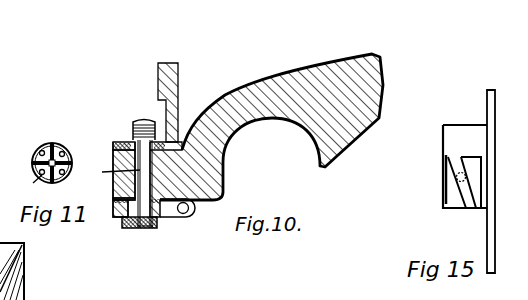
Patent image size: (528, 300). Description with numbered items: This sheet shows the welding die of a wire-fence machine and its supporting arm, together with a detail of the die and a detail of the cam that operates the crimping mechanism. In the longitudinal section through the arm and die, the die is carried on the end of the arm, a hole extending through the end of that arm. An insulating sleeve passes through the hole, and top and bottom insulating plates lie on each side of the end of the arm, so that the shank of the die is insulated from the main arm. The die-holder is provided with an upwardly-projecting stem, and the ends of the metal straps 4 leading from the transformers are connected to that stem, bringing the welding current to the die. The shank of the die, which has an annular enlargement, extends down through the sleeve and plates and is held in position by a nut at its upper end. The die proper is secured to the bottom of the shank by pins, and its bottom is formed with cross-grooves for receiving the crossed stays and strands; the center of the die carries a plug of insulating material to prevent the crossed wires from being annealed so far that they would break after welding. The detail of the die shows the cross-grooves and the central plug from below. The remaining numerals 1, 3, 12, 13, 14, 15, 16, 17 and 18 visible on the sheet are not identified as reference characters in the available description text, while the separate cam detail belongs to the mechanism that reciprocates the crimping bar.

In FIG. 10, the supporting arm 1 is at (304, 118).
In FIG. 15, the plate 3 is at (463, 211).
In FIG. 10, the metal straps 4 is at (158, 57).
In FIG. 10, the clamping block 12 is at (118, 190).
In FIG. 10, the bolt 13 is at (165, 92).
In FIG. 10, the bolt head 14 is at (133, 123).
In FIG. 10, the nut 15 is at (145, 227).
In FIG. 11, the nut 15 is at (33, 186).
In FIG. 11, the disk 16 is at (62, 153).
In FIG. 11, the perforation 17 is at (60, 177).
In FIG. 10, the cross bar 18 is at (145, 228).
In FIG. 11, the cross bar 18 is at (50, 147).